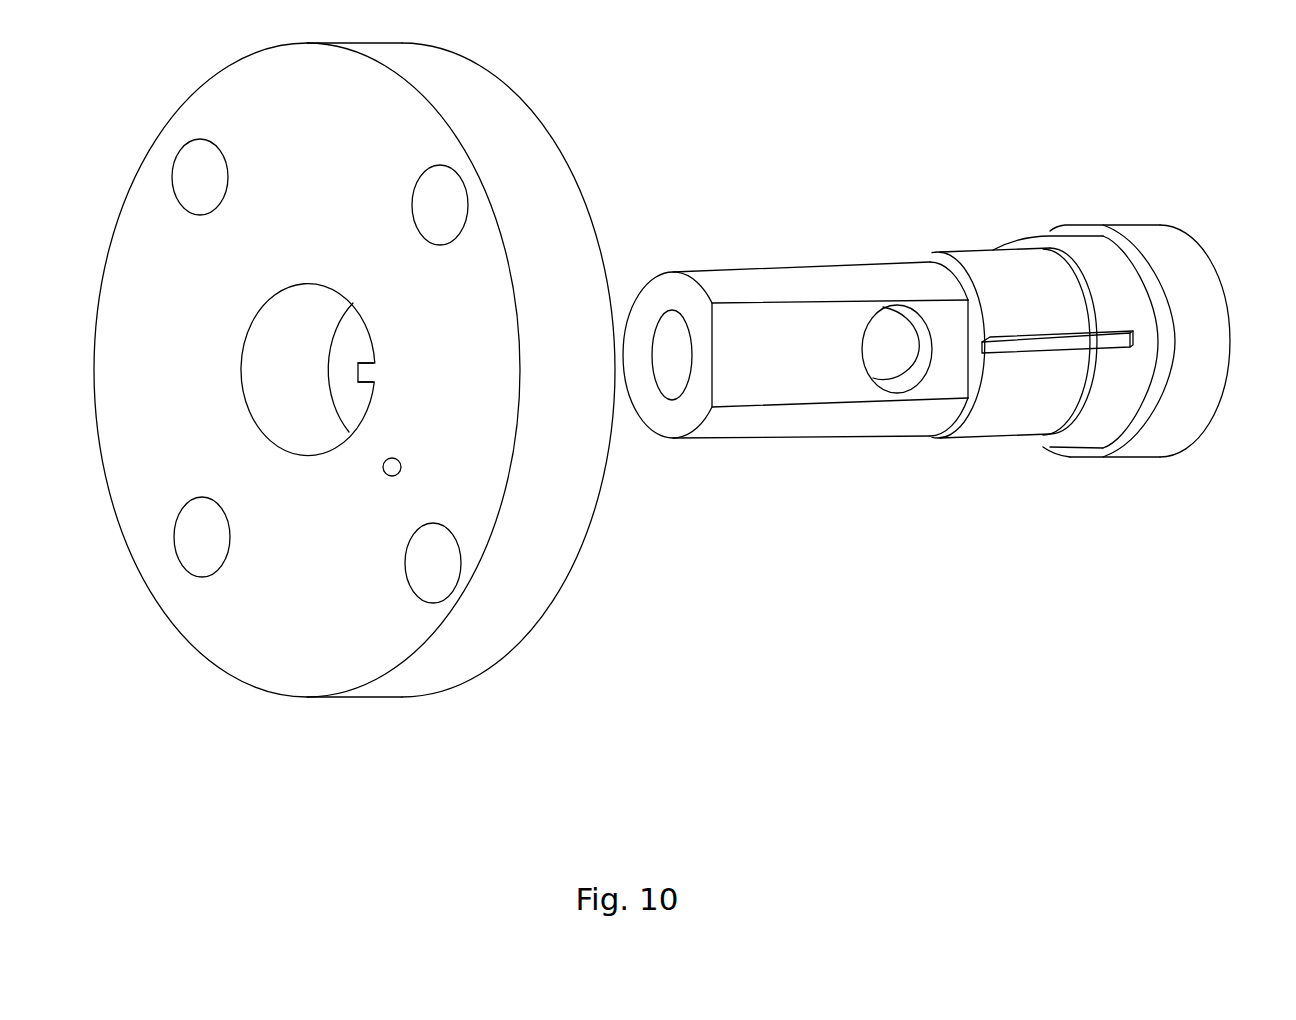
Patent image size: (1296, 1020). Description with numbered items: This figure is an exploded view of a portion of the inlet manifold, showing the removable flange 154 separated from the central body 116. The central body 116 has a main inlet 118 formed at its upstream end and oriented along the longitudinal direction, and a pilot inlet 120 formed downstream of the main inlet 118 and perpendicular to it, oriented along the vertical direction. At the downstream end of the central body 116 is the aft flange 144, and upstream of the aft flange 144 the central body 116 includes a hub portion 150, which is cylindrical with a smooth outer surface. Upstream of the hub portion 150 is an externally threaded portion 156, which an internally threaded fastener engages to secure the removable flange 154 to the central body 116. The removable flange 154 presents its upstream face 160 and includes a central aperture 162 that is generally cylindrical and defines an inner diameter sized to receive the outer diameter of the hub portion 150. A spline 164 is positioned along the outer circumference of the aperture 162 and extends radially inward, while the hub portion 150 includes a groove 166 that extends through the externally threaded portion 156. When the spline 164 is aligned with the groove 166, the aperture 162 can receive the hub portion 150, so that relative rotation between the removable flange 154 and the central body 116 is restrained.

The central body 116 is at (803, 230).
The main inlet 118 is at (665, 367).
The pilot inlet 120 is at (887, 355).
The aft flange 144 is at (1188, 407).
The hub portion 150 is at (1098, 420).
The removable flange 154 is at (475, 98).
The externally threaded portion 156 is at (988, 415).
The upstream face 160 is at (286, 595).
The central aperture 162 is at (285, 375).
The spline 164 is at (367, 373).
The groove 166 is at (1024, 340).